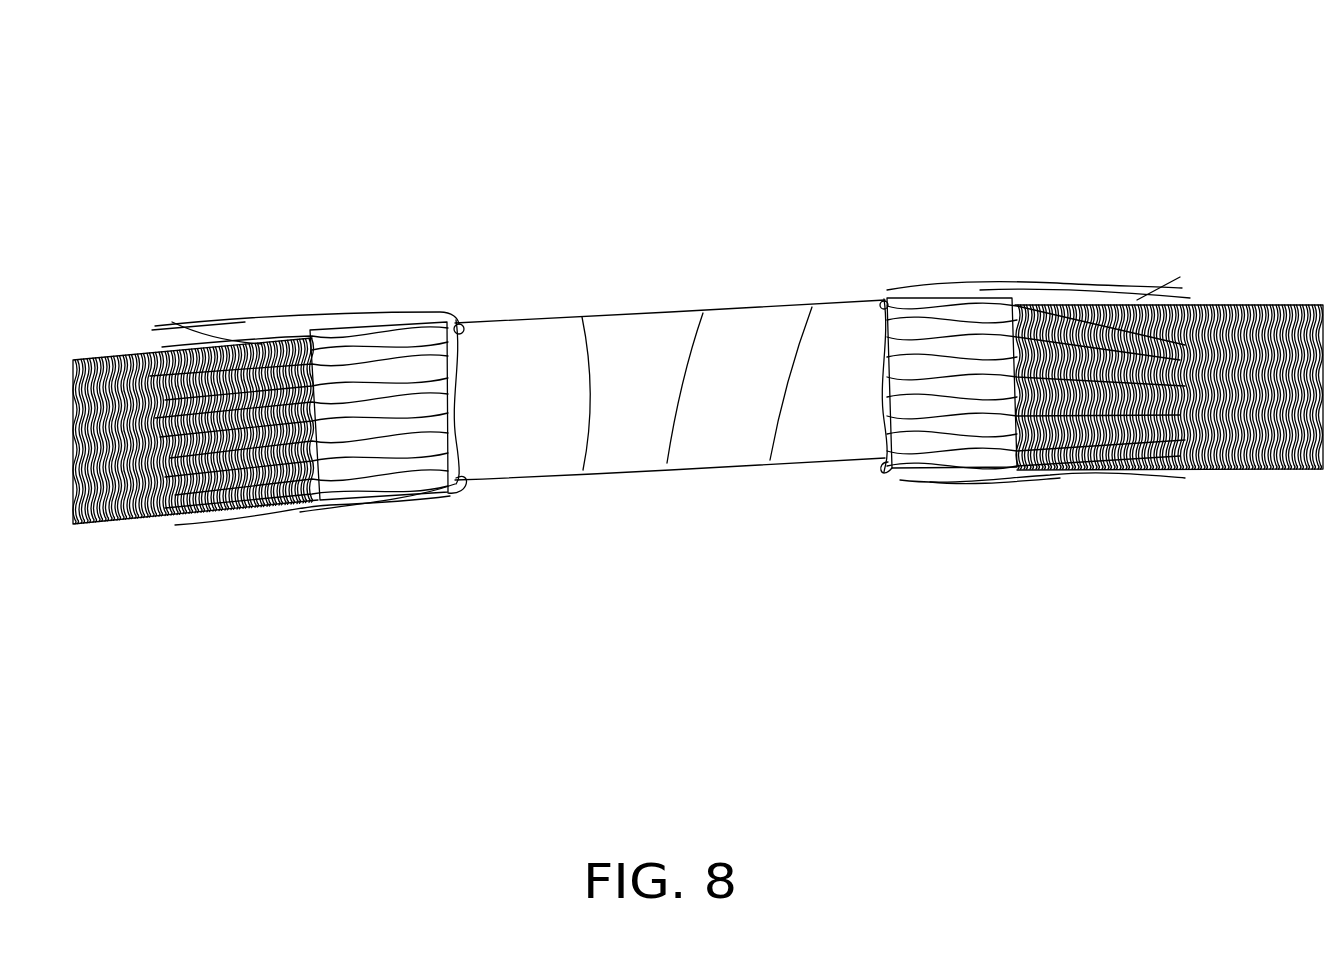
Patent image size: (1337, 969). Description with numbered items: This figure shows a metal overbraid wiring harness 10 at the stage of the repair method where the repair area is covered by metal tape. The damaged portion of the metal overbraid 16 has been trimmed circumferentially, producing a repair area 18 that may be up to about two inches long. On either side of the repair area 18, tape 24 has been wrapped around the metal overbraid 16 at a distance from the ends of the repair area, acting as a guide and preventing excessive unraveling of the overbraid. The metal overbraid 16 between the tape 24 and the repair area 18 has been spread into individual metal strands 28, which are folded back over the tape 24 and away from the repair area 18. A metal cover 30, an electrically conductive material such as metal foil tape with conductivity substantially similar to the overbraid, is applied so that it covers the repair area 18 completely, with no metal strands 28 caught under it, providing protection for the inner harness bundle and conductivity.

The metal overbraid wiring harness 10 is at (183, 122).
The metal overbraid 16 is at (1278, 307).
The repair area 18 is at (877, 270).
The tape 24 is at (345, 353).
The individual metal strands 28 is at (235, 320).
The metal cover 30 is at (712, 430).